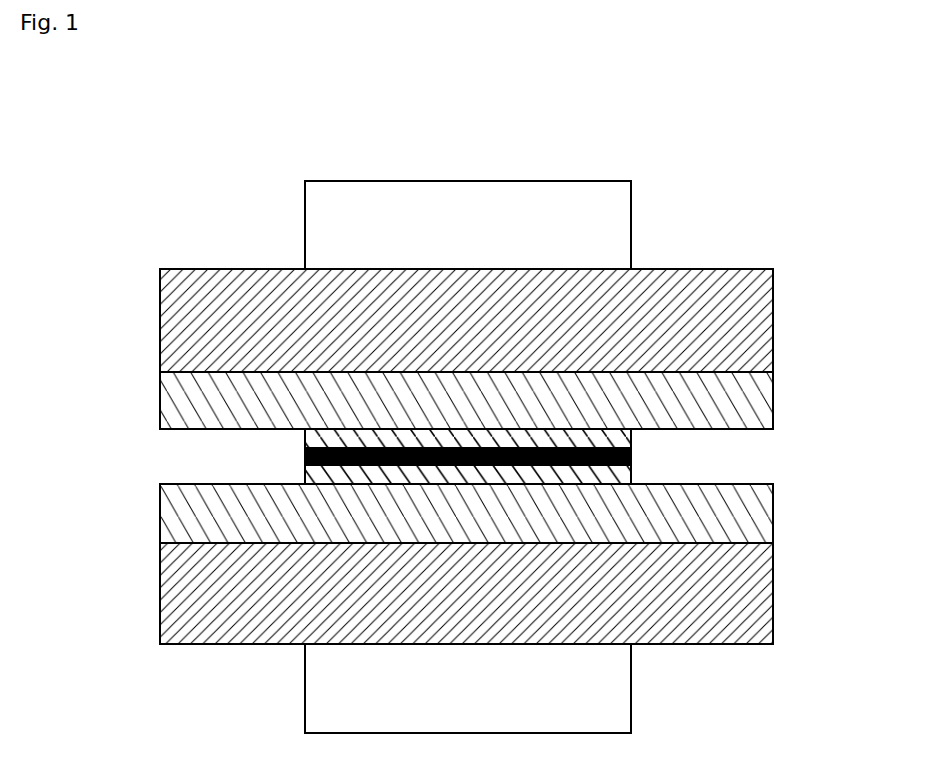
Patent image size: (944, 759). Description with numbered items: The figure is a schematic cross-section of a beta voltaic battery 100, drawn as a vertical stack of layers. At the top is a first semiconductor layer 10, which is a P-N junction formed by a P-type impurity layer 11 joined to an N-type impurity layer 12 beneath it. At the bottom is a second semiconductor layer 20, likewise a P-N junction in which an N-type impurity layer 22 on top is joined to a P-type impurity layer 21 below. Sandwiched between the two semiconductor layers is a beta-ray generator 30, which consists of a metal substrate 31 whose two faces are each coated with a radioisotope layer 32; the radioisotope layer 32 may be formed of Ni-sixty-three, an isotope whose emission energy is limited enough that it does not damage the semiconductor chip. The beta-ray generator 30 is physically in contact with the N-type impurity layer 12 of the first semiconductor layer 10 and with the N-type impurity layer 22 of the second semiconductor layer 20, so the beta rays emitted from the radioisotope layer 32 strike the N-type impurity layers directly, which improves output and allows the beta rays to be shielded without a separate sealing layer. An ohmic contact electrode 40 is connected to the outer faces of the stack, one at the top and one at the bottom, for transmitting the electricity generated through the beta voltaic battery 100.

The beta voltaic battery 100 is at (800, 122).
The first semiconductor layer 10 is at (144, 270).
The P-type impurity layer 11 is at (752, 318).
The N-type impurity layer 12 is at (752, 402).
The second semiconductor layer 20 is at (144, 485).
The P-type impurity layer 21 is at (752, 593).
The N-type impurity layer 22 is at (752, 510).
The beta-ray generator 30 is at (144, 429).
The metal substrate 31 is at (632, 456).
The radioisotope layer 32 is at (305, 437).
The ohmic contact electrode 40 is at (616, 196).